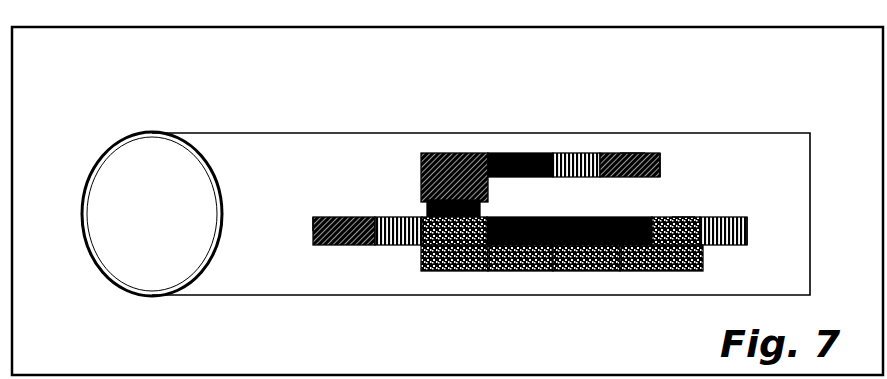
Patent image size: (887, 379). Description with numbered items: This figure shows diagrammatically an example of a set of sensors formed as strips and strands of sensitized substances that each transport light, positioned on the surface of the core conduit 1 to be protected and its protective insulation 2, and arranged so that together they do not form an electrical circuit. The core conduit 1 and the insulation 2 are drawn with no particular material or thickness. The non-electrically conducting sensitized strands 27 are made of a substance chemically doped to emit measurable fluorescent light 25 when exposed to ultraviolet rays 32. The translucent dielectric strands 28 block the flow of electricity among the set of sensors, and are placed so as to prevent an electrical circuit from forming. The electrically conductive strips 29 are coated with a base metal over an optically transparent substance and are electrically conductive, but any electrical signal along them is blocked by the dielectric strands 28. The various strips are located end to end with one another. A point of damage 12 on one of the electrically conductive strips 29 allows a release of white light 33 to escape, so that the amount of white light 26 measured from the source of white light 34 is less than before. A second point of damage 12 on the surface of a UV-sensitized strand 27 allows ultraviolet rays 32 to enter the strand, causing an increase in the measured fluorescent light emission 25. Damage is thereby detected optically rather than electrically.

The core conduit 1 is at (125, 152).
The insulation protecting the core 2 is at (272, 148).
The damage 12 is at (508, 192).
The fluorescent light emission 25 is at (303, 225).
The lesser amount of white light 26 is at (258, 240).
The non-electrically conducting sensitized strand 27 is at (486, 199).
The translucent dielectric strand 28 is at (561, 231).
The electrically conductive strip 29 is at (562, 244).
The source of ultraviolet rays 32 is at (632, 148).
The release of white light from point of damage 33 is at (683, 213).
The source of white light 34 is at (663, 162).